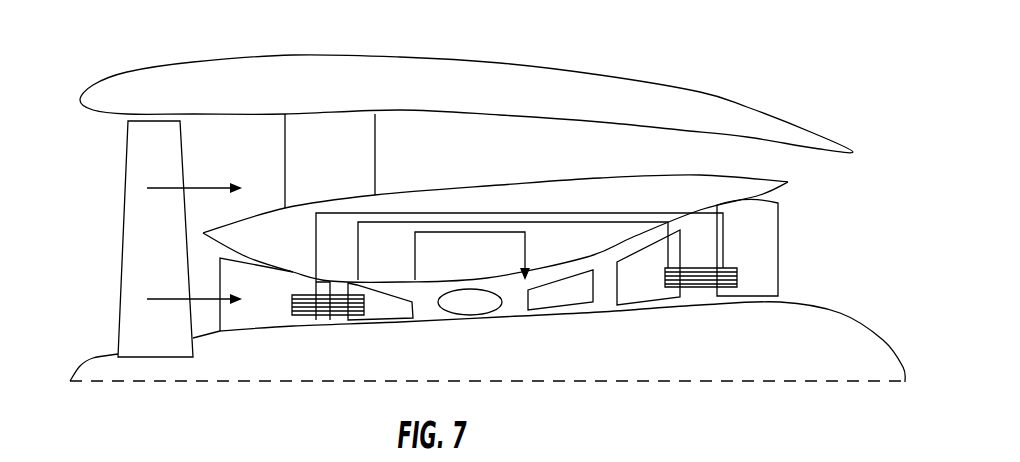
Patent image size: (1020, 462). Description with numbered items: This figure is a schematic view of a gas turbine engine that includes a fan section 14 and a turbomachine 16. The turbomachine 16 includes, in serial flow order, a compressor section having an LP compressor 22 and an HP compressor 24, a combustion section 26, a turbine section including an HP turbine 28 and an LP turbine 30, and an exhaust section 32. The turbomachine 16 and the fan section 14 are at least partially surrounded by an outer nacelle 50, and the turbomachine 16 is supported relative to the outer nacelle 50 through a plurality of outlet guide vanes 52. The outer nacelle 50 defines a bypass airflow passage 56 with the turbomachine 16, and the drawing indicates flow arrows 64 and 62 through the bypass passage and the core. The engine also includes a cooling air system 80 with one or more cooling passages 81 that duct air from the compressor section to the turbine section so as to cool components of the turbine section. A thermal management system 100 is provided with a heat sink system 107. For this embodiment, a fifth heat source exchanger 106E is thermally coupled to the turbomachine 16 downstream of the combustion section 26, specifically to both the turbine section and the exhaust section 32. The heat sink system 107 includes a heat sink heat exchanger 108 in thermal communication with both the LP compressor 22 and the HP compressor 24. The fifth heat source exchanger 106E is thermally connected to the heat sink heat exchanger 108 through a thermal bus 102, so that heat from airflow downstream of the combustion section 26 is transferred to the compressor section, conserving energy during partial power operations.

The fan section 14 is at (100, 172).
The outer nacelle 50 is at (385, 73).
The outlet guide vanes 52 is at (284, 168).
The bypass airflow 64 is at (207, 186).
The core airflow 62 is at (175, 297).
The bypass airflow passage 56 is at (491, 153).
The thermal management system 100 is at (426, 166).
The turbomachine 16 is at (579, 198).
The cooling air system 80 is at (514, 228).
The cooling passages 81 is at (414, 258).
The thermal bus 102 is at (315, 247).
The LP compressor 22 is at (256, 294).
The HP compressor 24 is at (375, 309).
The combustion section 26 is at (498, 272).
The HP turbine 28 is at (548, 303).
The LP turbine 30 is at (660, 288).
The exhaust section 32 is at (760, 260).
The heat sink heat exchanger 108 is at (308, 316).
The fifth heat source exchanger 106E is at (707, 289).
The heat sink system 107 is at (340, 350).